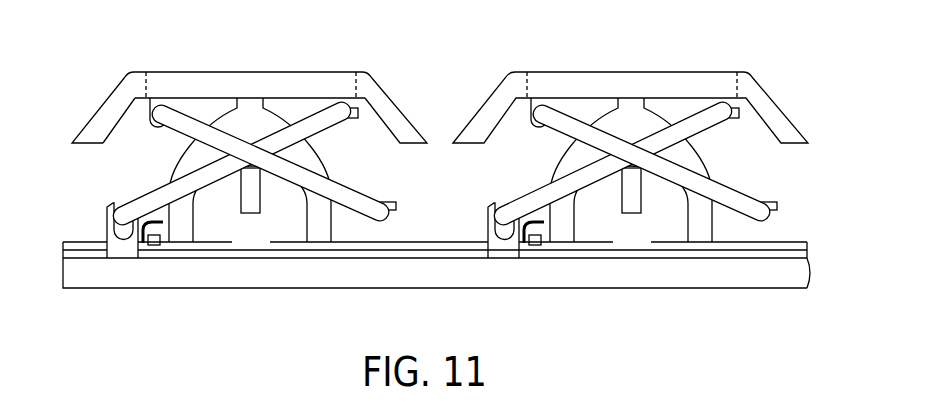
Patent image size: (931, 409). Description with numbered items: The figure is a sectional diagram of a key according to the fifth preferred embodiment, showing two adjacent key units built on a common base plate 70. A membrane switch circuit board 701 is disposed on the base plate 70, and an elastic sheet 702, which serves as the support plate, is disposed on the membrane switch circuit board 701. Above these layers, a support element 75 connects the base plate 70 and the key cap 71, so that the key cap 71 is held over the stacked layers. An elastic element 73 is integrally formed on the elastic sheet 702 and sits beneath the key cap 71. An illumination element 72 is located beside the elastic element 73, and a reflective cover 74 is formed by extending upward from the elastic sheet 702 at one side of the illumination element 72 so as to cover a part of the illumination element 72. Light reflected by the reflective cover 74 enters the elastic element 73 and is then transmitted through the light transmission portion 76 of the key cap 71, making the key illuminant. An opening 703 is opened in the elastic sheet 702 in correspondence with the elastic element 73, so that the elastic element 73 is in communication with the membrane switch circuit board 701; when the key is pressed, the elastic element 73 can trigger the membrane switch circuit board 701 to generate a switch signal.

The base plate 70 is at (131, 272).
The membrane switch circuit board 701 is at (320, 250).
The elastic sheet 702 is at (398, 244).
The opening 703 is at (247, 243).
The key cap 71 is at (108, 112).
The illumination element 72 is at (160, 244).
The elastic element 73 is at (310, 163).
The reflective cover 74 is at (157, 222).
The support element 75 is at (348, 200).
The light transmission portion 76 is at (297, 80).